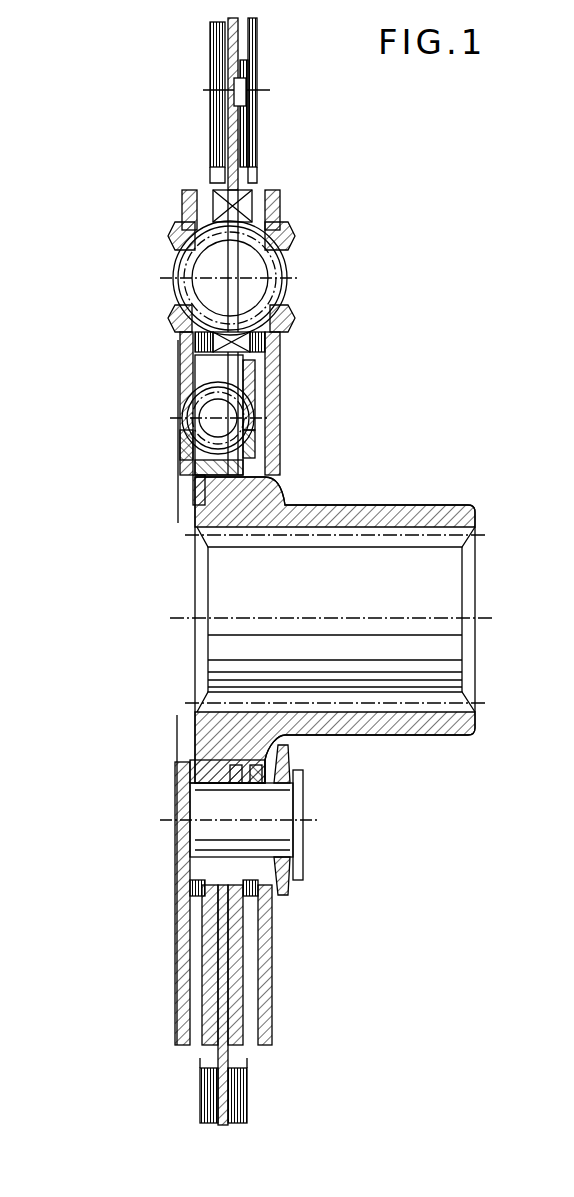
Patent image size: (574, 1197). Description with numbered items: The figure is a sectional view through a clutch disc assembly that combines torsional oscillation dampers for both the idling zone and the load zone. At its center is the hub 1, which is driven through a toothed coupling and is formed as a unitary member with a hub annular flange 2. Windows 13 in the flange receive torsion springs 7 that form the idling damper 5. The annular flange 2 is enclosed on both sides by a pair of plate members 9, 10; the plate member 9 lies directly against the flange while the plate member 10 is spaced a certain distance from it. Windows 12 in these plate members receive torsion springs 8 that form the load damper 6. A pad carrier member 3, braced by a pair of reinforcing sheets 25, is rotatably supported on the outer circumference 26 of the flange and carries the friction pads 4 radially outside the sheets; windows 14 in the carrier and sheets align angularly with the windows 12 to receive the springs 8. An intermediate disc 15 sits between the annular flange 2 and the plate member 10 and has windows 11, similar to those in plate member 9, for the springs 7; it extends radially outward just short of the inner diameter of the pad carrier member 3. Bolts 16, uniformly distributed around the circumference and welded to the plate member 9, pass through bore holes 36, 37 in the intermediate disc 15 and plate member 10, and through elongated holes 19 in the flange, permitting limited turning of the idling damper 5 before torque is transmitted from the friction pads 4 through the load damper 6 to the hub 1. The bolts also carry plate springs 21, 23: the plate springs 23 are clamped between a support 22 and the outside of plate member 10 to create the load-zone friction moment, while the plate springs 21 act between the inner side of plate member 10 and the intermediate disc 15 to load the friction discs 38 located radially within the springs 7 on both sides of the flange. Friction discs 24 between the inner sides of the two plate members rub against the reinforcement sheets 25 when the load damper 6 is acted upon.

The hub 1 is at (396, 517).
The hub annular flange 2 is at (216, 376).
The pad carrier member 3 is at (224, 1053).
The friction pads 4 is at (212, 146).
The idling damper 5 is at (291, 425).
The load damper 6 is at (303, 296).
The torsion springs 7 is at (238, 412).
The torsion springs 8 is at (276, 250).
The plate member 9 is at (190, 200).
The plate member 10 is at (272, 200).
The apertures or windows 11 is at (182, 437).
The windows or openings 12 is at (178, 225).
The windows or openings 13 is at (257, 383).
The apertures or windows 14 is at (246, 212).
The intermediate disc 15 is at (258, 471).
The bolts 16 is at (290, 840).
The elongated holes 19 is at (212, 770).
The plate springs 21 is at (286, 757).
The support 22 is at (305, 800).
The plate springs 23 is at (290, 885).
The friction discs 24 is at (198, 896).
The reinforcing sheets 25 is at (236, 962).
The outer circumference 26 is at (198, 342).
The bore hole 36 is at (240, 796).
The bore hole 37 is at (263, 798).
The friction discs 38 is at (208, 478).